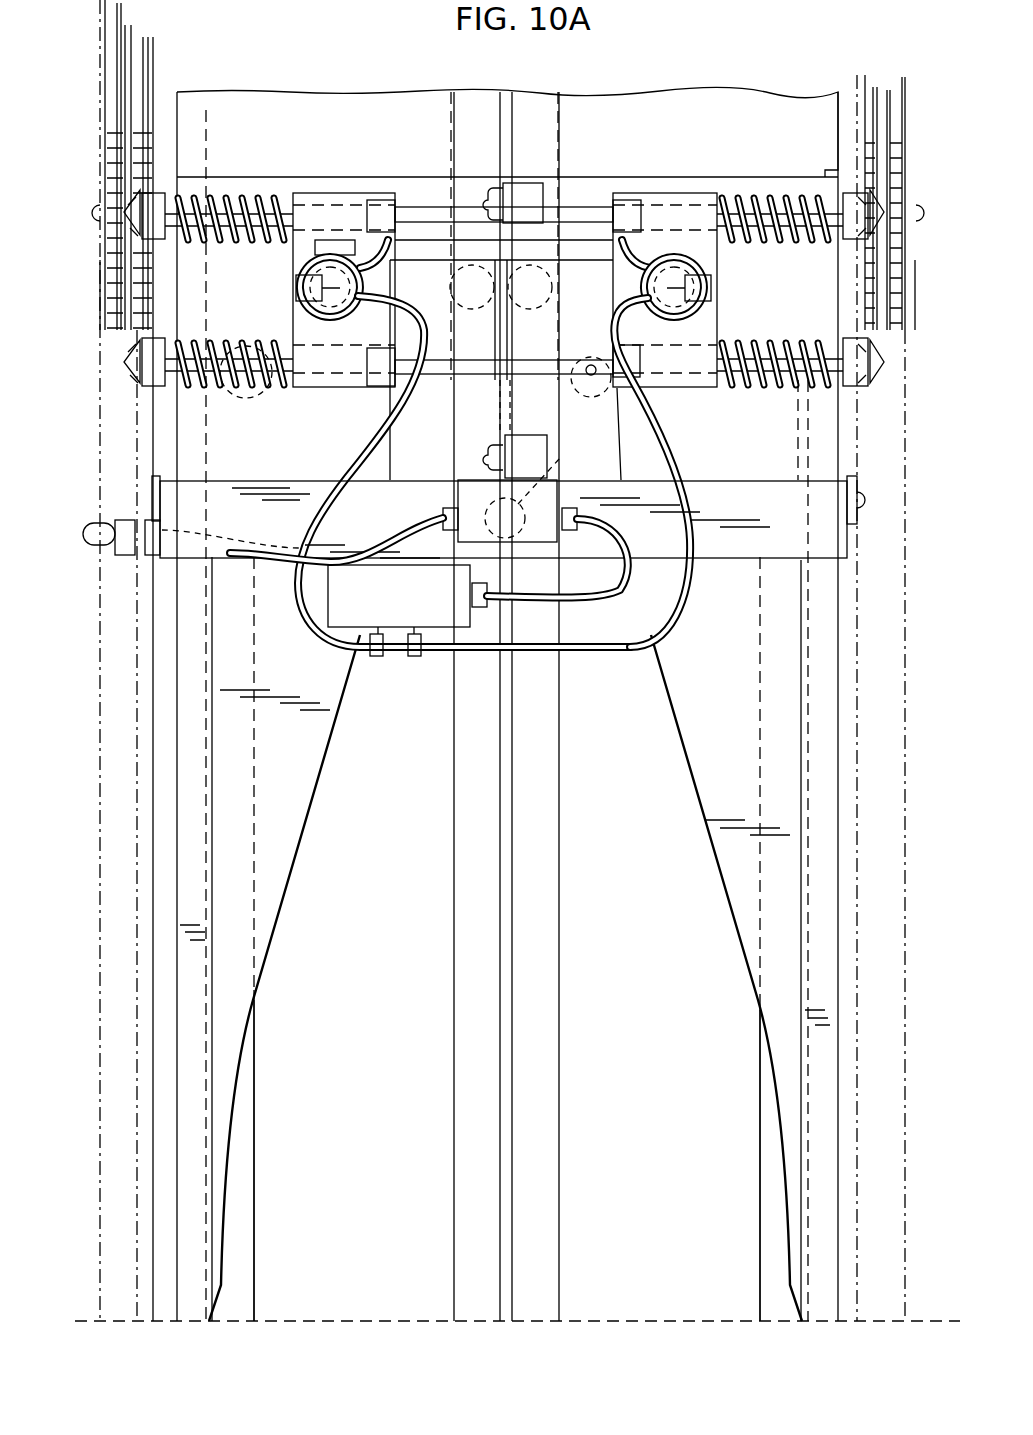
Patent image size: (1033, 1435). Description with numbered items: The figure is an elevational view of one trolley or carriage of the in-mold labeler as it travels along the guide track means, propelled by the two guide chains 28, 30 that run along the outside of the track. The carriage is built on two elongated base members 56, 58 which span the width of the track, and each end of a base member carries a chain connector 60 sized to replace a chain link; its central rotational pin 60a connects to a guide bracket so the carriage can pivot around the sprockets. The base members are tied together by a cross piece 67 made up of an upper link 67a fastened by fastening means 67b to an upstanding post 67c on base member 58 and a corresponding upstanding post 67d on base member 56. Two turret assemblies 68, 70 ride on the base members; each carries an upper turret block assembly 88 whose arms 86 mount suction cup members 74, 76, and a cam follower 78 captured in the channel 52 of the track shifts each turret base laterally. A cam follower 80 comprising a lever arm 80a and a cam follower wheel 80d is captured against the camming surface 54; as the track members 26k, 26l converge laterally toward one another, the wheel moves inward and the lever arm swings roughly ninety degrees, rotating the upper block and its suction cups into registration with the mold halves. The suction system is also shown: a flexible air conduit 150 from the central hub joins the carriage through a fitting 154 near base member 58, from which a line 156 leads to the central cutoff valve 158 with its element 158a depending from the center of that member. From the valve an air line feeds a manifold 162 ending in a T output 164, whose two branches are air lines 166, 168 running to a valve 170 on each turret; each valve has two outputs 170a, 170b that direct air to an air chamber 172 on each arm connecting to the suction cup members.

The guide chain 28 is at (120, 150).
The guide chain 30 is at (895, 150).
The central rotational pin 60a is at (98, 207).
The chain connector 60 is at (100, 252).
The suction cup member 76 is at (135, 200).
The suction cup device 74 is at (128, 355).
The arm 86 is at (258, 200).
The upper turret block assembly 88 is at (302, 205).
The turret assembly 68 is at (342, 205).
The air chamber 172 is at (383, 208).
The fastening means 67b is at (490, 190).
The upstanding post 67d is at (520, 183).
The base member 56 is at (580, 182).
The turret assembly 70 is at (655, 212).
The valve output 170a is at (306, 262).
The valve 170 is at (296, 292).
The valve output 170b is at (308, 312).
The lever arm 80a is at (505, 236).
The cam follower 78 is at (543, 300).
The upper link 67a is at (500, 358).
The cross piece 67 is at (503, 396).
The upstanding post 67c is at (525, 438).
The cam follower wheel 80d is at (432, 400).
The cam follower 80 is at (238, 398).
The valve element 158a is at (554, 492).
The central cutoff valve 158 is at (458, 500).
The hose 156 is at (203, 535).
The base member 58 is at (302, 520).
The flexible air conduit 150 is at (100, 547).
The fitting 154 is at (152, 556).
The manifold 162 is at (418, 603).
The air line 166 is at (322, 635).
The T output 164 is at (397, 660).
The air line 168 is at (672, 578).
The camming surface 54 is at (328, 745).
The channel 52 is at (542, 818).
The guide track member 26k is at (266, 920).
The guide track member 26l is at (736, 920).